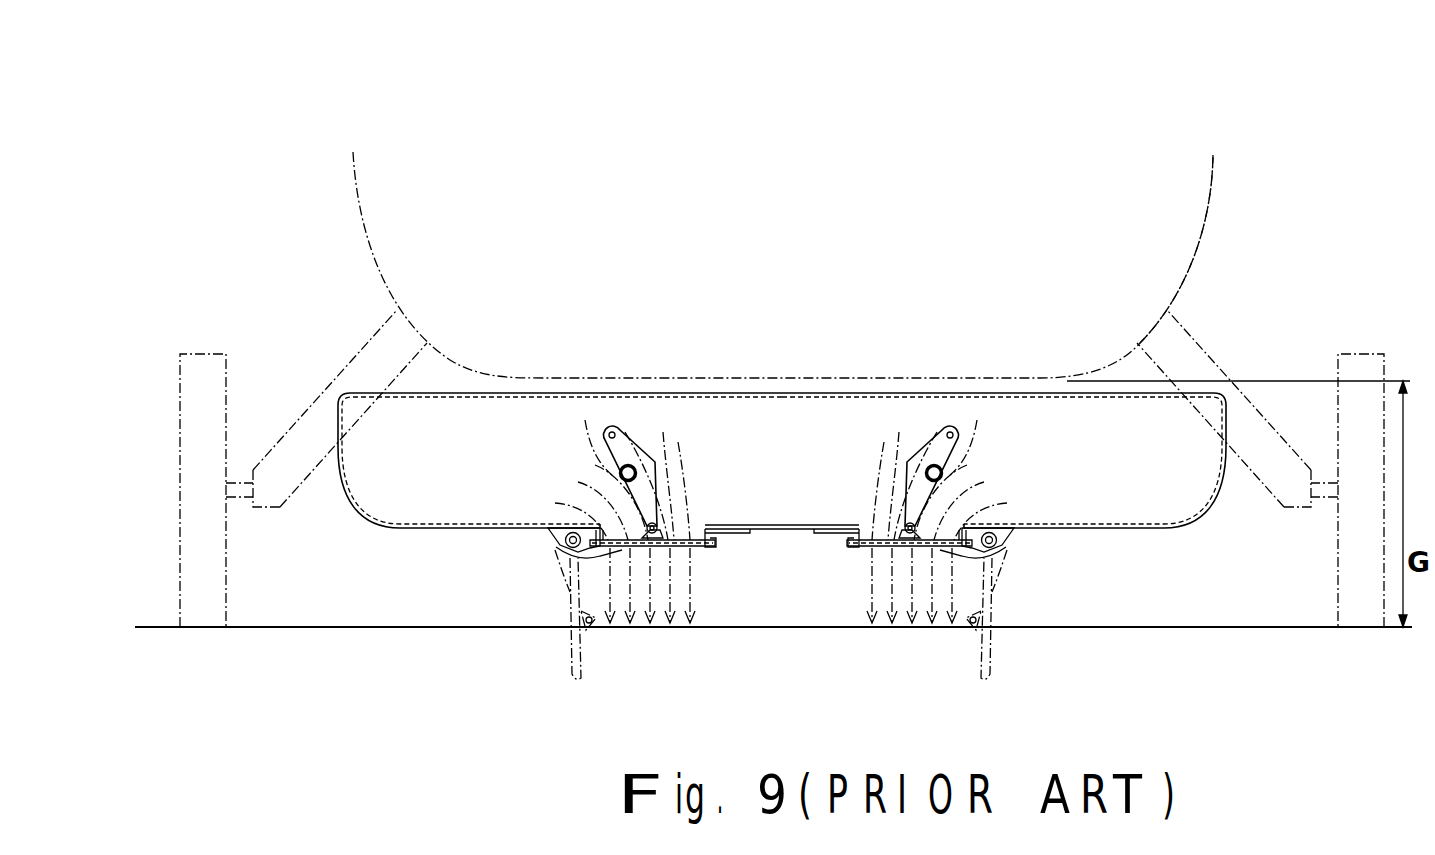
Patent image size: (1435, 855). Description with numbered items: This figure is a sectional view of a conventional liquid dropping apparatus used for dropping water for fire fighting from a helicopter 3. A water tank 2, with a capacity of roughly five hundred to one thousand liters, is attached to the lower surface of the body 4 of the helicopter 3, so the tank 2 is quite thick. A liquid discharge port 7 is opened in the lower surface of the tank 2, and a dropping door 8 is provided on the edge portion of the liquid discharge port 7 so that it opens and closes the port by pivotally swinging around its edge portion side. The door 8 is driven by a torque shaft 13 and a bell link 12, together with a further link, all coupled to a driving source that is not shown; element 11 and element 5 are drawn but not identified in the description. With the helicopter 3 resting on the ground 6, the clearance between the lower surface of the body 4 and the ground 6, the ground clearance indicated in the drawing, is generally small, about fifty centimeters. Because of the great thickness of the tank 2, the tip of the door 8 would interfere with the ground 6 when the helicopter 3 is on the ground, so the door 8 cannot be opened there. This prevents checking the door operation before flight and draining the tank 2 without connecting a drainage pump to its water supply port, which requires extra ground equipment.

The water tank 2 is at (423, 393).
The helicopter 3 is at (1213, 190).
The body 4 is at (1212, 206).
The wheel 5 is at (1365, 354).
The ground 6 is at (153, 625).
The liquid discharge port 7 is at (700, 546).
The dropping door 8 is at (680, 546).
The link arm 11 is at (638, 440).
The bell link 12 is at (624, 433).
The torque shaft 13 is at (603, 457).